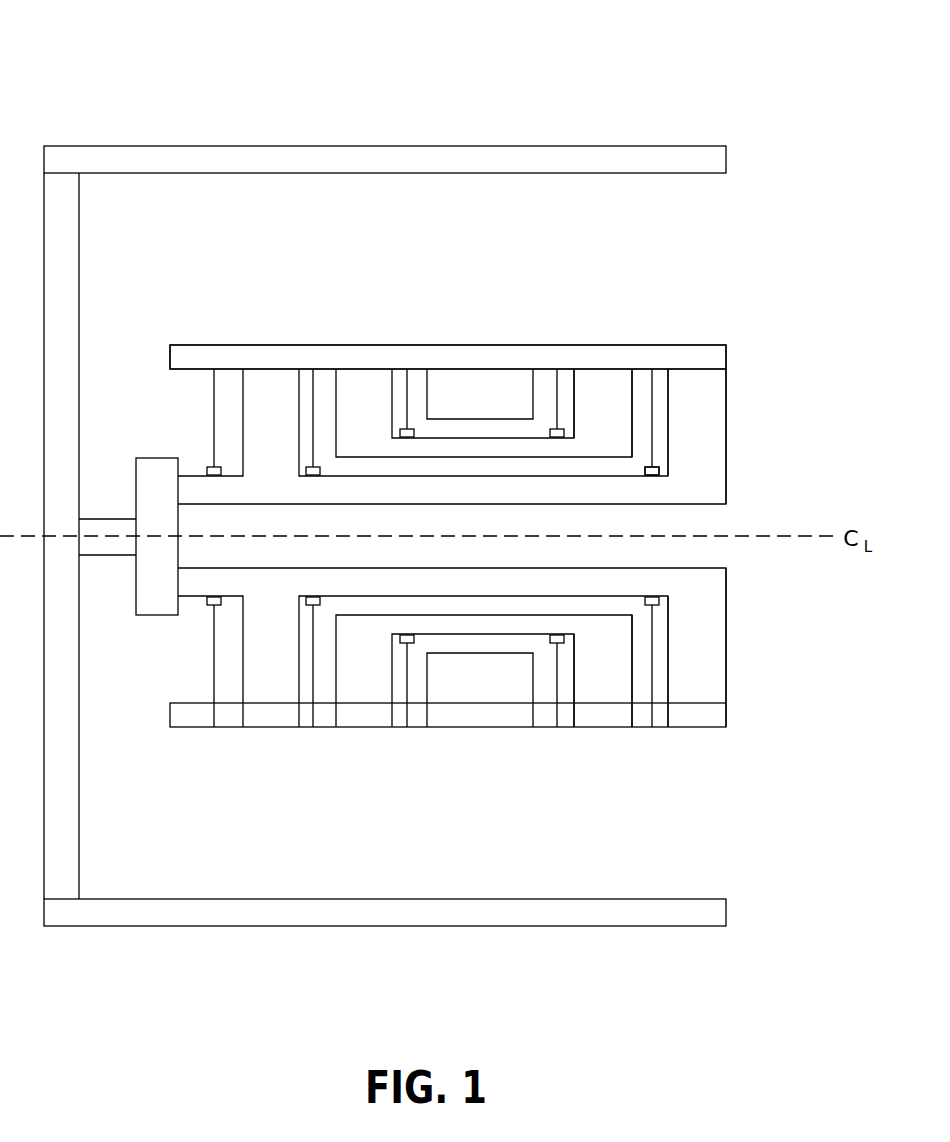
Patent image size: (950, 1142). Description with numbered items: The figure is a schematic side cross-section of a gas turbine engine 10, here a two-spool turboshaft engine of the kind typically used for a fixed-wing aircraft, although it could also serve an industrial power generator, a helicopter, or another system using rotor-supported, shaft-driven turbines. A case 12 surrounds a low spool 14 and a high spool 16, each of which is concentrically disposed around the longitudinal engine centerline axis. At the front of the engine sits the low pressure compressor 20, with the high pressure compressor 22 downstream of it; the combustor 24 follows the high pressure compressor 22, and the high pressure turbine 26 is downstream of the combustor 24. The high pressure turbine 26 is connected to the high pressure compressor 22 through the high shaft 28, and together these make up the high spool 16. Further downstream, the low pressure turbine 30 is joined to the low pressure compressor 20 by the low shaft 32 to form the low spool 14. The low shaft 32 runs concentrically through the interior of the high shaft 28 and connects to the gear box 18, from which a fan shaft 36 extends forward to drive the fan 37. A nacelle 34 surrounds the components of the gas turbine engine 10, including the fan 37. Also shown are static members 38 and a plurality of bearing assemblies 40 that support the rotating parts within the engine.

The gas turbine engine 10 is at (746, 88).
The case 12 is at (712, 345).
The low spool 14 is at (270, 350).
The high spool 16 is at (360, 350).
The gear box 18 is at (141, 457).
The low pressure compressor 20 is at (292, 372).
The high pressure compressor 22 is at (383, 372).
The combustor 24 is at (483, 378).
The high pressure turbine 26 is at (578, 378).
The high shaft 28 is at (540, 445).
The low pressure turbine 30 is at (698, 378).
The low shaft 32 is at (626, 491).
The nacelle 34 is at (614, 163).
The fan shaft 36 is at (102, 518).
The fan 37 is at (44, 187).
The static members 38 is at (408, 397).
The bearing assemblies 40 is at (660, 465).